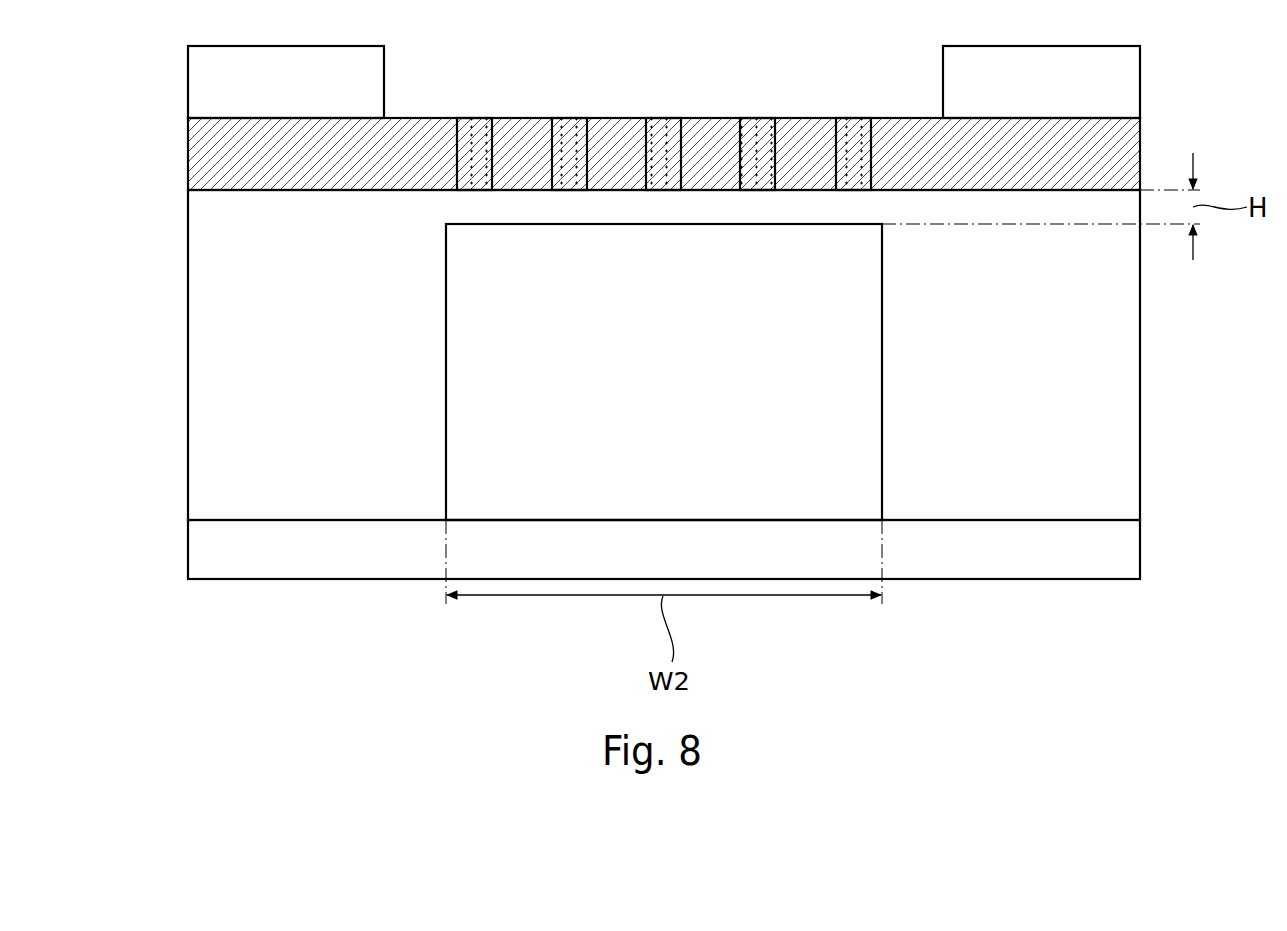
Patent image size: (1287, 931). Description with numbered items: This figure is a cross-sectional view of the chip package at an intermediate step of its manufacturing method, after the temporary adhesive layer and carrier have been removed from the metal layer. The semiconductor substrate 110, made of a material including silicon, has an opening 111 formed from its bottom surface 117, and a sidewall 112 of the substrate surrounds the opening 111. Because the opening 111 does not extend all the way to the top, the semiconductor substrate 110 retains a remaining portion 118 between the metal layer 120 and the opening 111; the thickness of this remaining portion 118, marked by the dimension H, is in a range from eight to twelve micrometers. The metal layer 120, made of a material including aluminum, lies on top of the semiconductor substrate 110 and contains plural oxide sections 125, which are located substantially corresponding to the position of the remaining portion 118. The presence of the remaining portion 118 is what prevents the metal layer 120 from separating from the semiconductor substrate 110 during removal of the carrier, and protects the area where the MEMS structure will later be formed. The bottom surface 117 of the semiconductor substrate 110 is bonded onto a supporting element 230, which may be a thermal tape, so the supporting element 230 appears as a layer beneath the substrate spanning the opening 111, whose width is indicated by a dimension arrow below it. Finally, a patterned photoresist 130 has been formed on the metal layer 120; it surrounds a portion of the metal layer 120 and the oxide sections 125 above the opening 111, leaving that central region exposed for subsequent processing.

The semiconductor substrate 110 is at (212, 420).
The opening 111 is at (658, 430).
The sidewall 112 is at (446, 366).
The bottom surface 117 is at (337, 528).
The remaining portion 118 is at (715, 203).
The metal layer 120 is at (212, 153).
The oxide sections 125 is at (477, 150).
The patterned photoresist 130 is at (212, 82).
The supporting element 230 is at (212, 550).